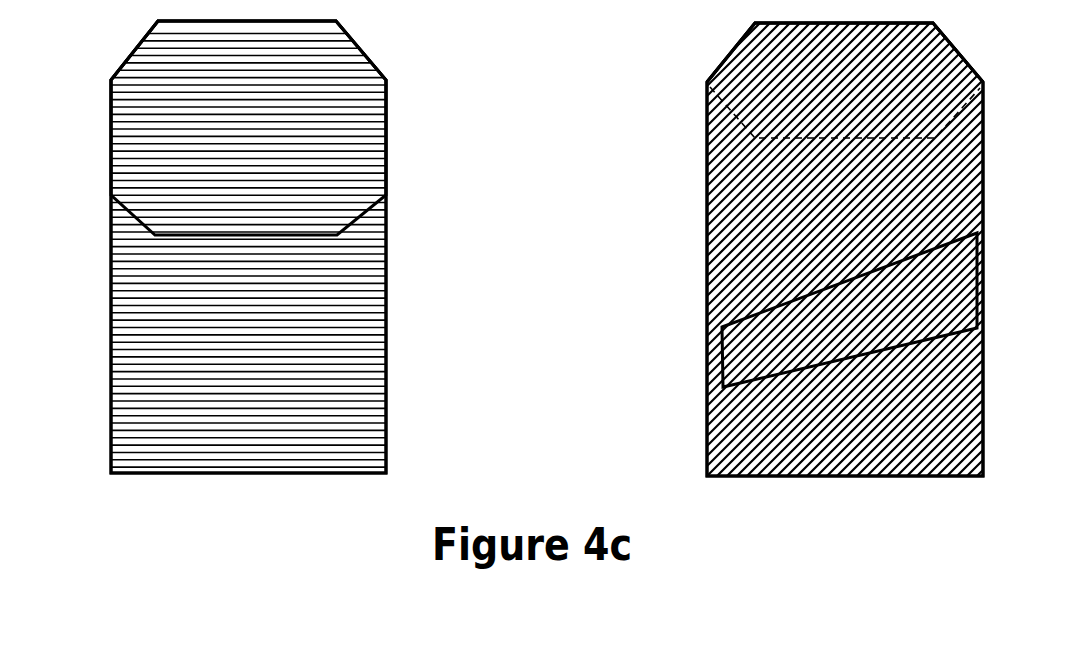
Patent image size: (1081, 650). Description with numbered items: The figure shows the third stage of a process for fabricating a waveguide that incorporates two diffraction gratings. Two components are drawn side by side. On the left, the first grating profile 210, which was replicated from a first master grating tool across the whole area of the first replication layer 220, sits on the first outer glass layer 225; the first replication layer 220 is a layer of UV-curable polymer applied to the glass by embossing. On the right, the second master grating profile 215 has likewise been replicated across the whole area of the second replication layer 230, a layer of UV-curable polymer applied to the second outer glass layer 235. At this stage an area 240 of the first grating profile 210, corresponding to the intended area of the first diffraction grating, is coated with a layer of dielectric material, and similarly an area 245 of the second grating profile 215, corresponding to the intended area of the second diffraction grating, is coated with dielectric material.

The first grating profile 210 is at (348, 293).
The second master grating profile 215 is at (923, 95).
The first replication layer 220 is at (388, 338).
The first outer glass layer 225 is at (291, 267).
The second replication layer 230 is at (707, 130).
The second outer glass layer 235 is at (803, 249).
The area of the first grating profile 240 is at (192, 237).
The area of the second grating profile 245 is at (890, 347).